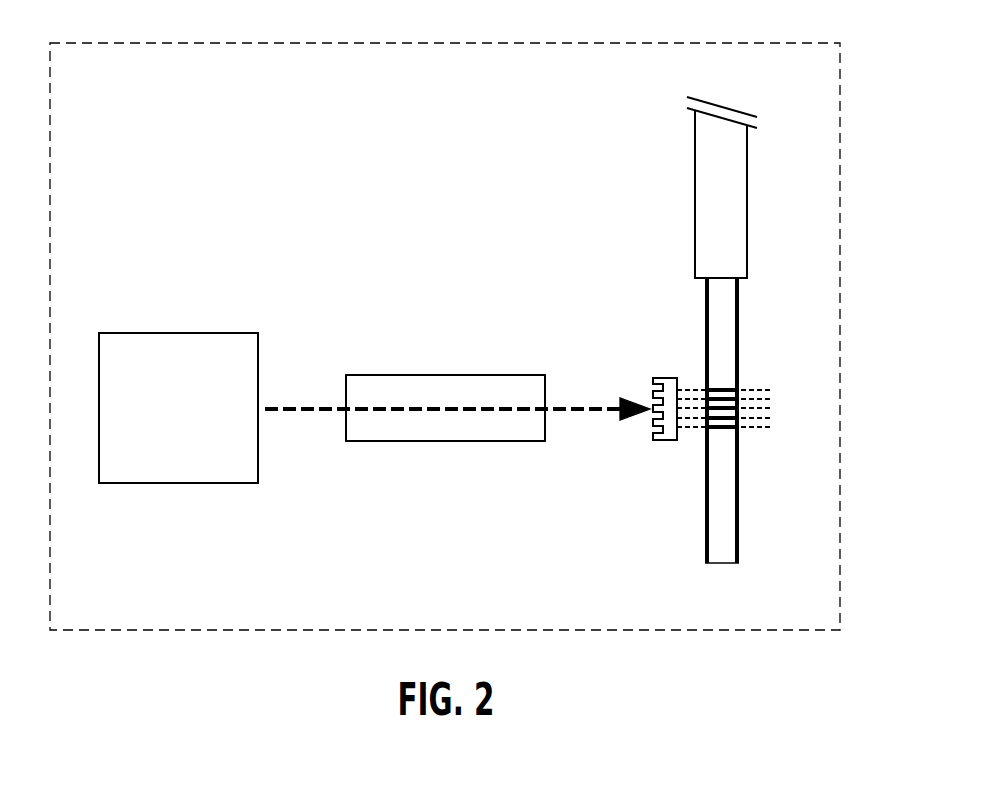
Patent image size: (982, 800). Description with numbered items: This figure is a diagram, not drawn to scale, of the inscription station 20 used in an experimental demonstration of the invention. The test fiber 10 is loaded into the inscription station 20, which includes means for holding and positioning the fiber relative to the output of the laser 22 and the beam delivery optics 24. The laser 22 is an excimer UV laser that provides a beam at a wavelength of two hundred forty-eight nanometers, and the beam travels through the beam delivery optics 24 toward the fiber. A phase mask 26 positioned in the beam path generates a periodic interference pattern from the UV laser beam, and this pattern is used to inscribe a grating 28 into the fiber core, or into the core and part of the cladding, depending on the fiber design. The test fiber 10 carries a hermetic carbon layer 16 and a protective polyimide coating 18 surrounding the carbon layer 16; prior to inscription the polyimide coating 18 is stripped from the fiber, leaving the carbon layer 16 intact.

The test fiber 10 is at (662, 152).
The hermetic carbon layer 16 is at (740, 317).
The protective polyimide coating 18 is at (732, 187).
The inscription station 20 is at (797, 26).
The laser 22 is at (188, 322).
The beam delivery optics 24 is at (437, 366).
The phase mask 26 is at (652, 372).
The grating 28 is at (773, 380).